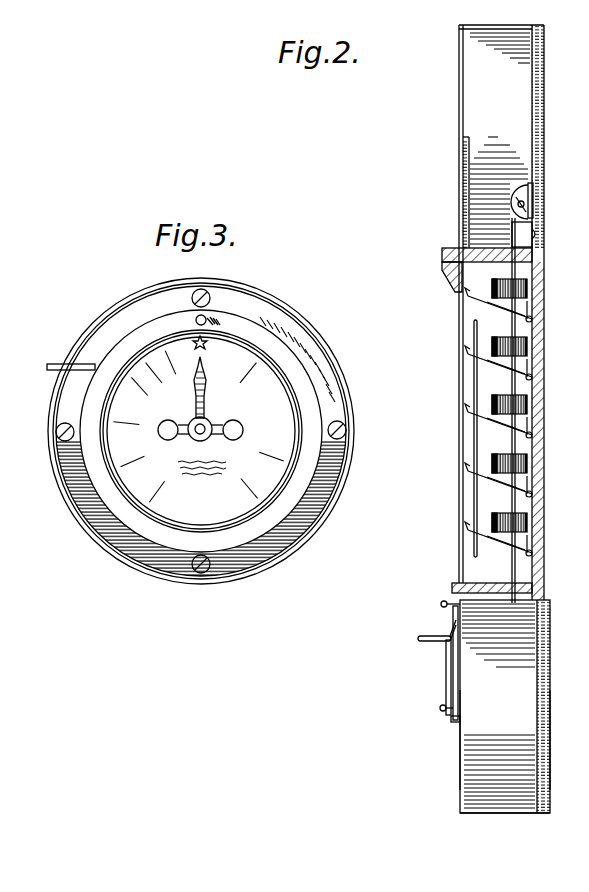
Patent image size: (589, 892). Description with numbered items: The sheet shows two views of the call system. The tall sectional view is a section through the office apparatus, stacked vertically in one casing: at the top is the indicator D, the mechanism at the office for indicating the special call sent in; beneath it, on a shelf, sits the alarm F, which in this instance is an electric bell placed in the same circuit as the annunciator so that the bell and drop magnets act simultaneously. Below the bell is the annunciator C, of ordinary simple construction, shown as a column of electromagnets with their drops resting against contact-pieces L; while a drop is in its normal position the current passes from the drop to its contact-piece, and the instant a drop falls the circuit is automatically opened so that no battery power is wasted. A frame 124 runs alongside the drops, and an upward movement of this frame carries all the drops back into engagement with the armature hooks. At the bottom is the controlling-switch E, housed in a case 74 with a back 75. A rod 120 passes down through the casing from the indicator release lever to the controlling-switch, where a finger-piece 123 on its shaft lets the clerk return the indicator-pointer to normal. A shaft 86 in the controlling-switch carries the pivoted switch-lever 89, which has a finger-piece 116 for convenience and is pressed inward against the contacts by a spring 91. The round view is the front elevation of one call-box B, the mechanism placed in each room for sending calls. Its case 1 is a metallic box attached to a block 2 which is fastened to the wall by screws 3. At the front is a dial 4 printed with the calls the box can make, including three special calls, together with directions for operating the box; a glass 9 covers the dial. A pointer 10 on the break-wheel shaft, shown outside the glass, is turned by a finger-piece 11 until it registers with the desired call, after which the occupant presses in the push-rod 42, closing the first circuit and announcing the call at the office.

In FIG. 3, the case 1 is at (198, 445).
In FIG. 3, the block 2 is at (313, 539).
In FIG. 3, the screws 3 is at (200, 290).
In FIG. 3, the dial 4 is at (150, 494).
In FIG. 3, the glass 9 is at (120, 441).
In FIG. 3, the pointer 10 is at (206, 392).
In FIG. 3, the finger-piece 11 is at (169, 427).
In FIG. 3, the push-rod 42 is at (196, 320).
In FIG. 2, the case 74 is at (474, 785).
In FIG. 2, the back 75 is at (458, 778).
In FIG. 2, the shaft 86 is at (452, 722).
In FIG. 2, the switch-lever 89 is at (446, 673).
In FIG. 2, the spring 91 is at (440, 706).
In FIG. 2, the finger-piece 116 is at (416, 639).
In FIG. 2, the rod 120 is at (511, 268).
In FIG. 2, the finger-piece 123 is at (440, 604).
In FIG. 2, the frame 124 is at (474, 428).
In FIG. 3, the call-box B is at (202, 431).
In FIG. 2, the annunciator C is at (485, 422).
In FIG. 2, the indicator D is at (500, 137).
In FIG. 2, the controlling-switch E is at (505, 706).
In FIG. 2, the alarm F is at (518, 205).
In FIG. 2, the contact-pieces L is at (545, 310).